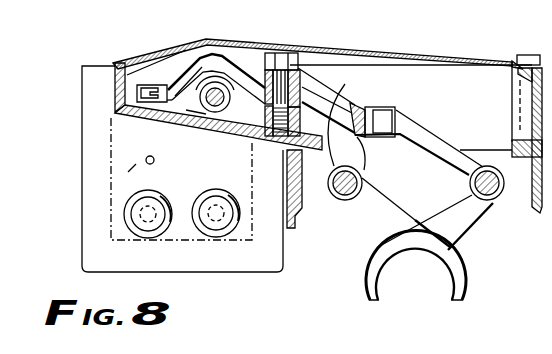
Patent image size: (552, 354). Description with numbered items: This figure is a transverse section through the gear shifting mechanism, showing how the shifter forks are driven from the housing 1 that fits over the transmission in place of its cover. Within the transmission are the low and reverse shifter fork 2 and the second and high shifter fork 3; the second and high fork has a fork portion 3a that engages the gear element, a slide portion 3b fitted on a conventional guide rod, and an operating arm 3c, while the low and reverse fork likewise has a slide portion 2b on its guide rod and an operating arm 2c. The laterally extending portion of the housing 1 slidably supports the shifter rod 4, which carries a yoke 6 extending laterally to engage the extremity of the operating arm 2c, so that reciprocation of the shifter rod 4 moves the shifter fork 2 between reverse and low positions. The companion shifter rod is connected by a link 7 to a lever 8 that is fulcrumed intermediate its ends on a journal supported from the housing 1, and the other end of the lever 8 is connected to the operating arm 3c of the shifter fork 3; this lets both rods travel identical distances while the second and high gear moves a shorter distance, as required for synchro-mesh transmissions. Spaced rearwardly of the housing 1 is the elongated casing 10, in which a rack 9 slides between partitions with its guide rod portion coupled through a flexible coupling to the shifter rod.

The housing 1 is at (478, 62).
The low and reverse shifter fork 2 is at (366, 222).
The slide portion 2b is at (353, 207).
The operating arm 2c is at (345, 100).
The second and high shifter fork 3 is at (463, 220).
The fork portion 3a is at (460, 270).
The slide portion 3b is at (494, 205).
The operating arm 3c is at (404, 123).
The shifter rod 4 is at (196, 116).
The yoke 6 is at (247, 102).
The link 7 is at (151, 100).
The lever 8 is at (331, 127).
The rack 9 is at (501, 157).
The casing 10 is at (122, 187).